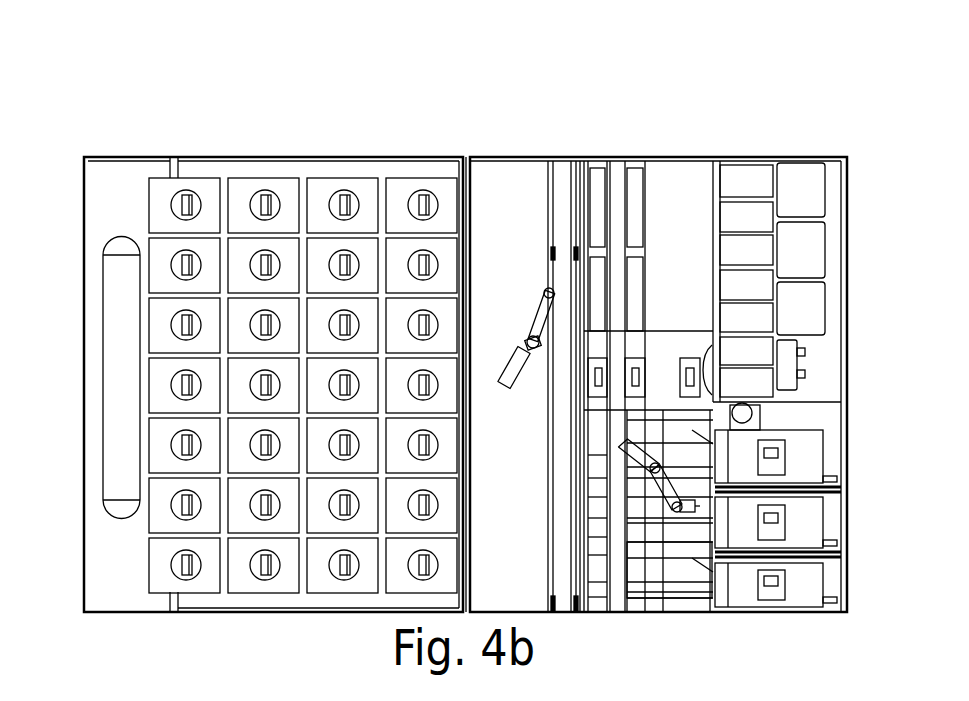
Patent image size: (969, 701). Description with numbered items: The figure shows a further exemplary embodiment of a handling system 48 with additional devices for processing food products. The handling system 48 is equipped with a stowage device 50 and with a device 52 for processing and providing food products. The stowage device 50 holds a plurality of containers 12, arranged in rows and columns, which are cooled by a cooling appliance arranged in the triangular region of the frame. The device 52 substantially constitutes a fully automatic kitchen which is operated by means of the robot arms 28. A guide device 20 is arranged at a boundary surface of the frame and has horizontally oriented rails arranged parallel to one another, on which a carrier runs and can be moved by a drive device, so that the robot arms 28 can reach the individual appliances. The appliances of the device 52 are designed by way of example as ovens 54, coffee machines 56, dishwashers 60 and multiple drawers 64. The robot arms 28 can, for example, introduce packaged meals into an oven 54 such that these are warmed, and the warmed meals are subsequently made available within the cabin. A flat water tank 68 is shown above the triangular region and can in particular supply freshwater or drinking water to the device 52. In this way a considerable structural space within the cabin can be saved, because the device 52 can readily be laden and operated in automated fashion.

The container 12 is at (204, 185).
The guide device 20 is at (566, 135).
The robot arm 28 is at (533, 305).
The handling system 48 is at (516, 100).
The stowage device 50 is at (254, 140).
The device for processing and providing food products 52 is at (848, 144).
The oven 54 is at (813, 457).
The coffee machine 56 is at (757, 163).
The dishwasher 60 is at (641, 222).
The drawer 64 is at (682, 577).
The water tank 68 is at (118, 355).